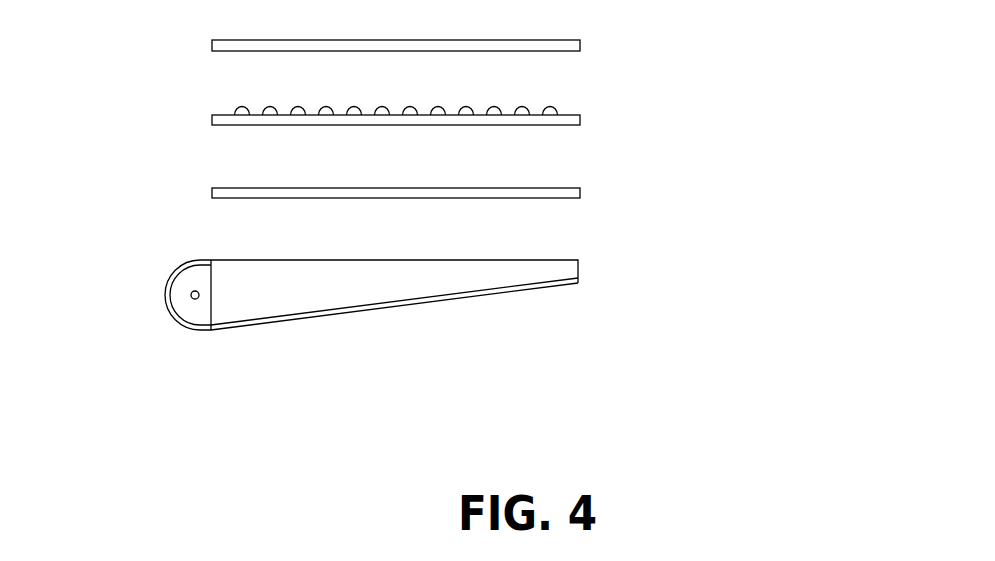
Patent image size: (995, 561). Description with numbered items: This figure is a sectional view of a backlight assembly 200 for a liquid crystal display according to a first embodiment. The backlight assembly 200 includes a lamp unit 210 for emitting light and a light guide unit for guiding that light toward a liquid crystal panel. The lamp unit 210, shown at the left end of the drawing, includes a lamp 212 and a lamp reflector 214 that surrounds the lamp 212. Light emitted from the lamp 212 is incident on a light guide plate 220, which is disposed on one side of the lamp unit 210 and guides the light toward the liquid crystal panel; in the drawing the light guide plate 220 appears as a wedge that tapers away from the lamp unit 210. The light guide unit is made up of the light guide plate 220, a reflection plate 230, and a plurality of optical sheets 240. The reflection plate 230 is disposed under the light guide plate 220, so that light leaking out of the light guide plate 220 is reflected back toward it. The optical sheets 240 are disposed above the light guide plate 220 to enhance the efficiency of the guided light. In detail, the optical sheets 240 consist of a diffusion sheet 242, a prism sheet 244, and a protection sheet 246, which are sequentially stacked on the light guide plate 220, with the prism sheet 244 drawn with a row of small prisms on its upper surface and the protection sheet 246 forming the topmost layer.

The backlight assembly 200 is at (463, 189).
The lamp unit 210 is at (119, 305).
The lamp 212 is at (191, 295).
The lamp reflector 214 is at (190, 330).
The light guide plate 220 is at (578, 262).
The reflection plate 230 is at (435, 304).
The optical sheets 240 is at (496, 117).
The diffusion sheet 242 is at (442, 193).
The prism sheet 244 is at (580, 119).
The protection sheet 246 is at (580, 45).